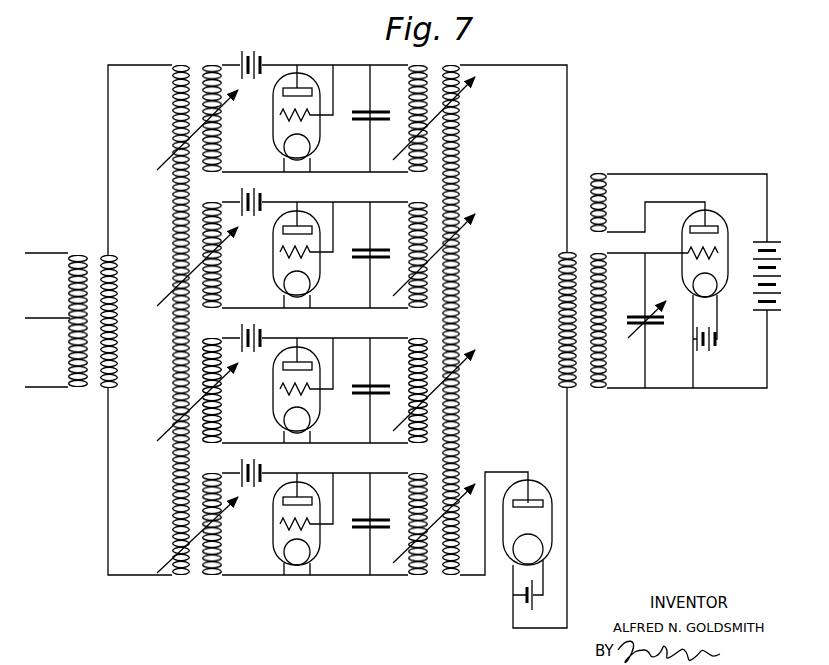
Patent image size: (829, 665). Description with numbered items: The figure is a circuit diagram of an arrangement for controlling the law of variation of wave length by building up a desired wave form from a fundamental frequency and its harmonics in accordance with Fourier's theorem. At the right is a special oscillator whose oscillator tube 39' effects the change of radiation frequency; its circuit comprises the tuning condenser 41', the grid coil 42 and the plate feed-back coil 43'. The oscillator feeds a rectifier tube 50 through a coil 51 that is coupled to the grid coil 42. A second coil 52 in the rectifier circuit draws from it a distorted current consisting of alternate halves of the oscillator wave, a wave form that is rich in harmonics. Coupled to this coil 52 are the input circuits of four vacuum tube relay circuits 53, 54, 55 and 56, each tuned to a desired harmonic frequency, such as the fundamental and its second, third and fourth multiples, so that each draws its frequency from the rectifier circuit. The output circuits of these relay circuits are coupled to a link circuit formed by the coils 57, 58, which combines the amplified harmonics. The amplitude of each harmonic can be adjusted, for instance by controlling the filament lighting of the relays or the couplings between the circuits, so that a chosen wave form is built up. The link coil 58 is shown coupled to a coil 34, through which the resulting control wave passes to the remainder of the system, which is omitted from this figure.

The coil 34 is at (73, 338).
The link circuit coil 58 is at (114, 348).
The link circuit coil 57 is at (173, 250).
The vacuum tube relay circuit 53 is at (284, 118).
The vacuum tube relay circuit 54 is at (284, 255).
The vacuum tube relay circuit 55 is at (284, 390).
The vacuum tube relay circuit 56 is at (284, 524).
The second coil 52 is at (455, 276).
The coil 51 is at (558, 322).
The rectifier tube 50 is at (540, 495).
The plate feed-back coil 43' is at (614, 202).
The grid coil 42 is at (604, 307).
The oscillator tube 39' is at (716, 290).
The tuning condenser 41' is at (653, 328).